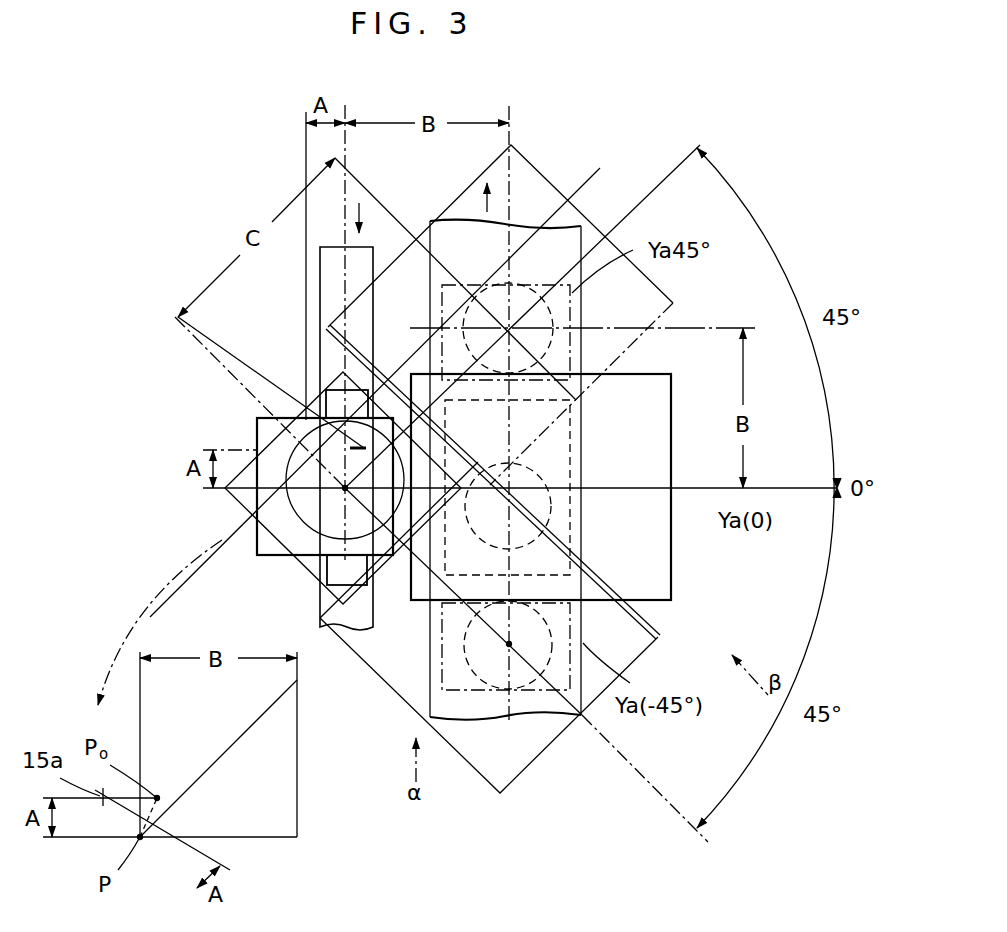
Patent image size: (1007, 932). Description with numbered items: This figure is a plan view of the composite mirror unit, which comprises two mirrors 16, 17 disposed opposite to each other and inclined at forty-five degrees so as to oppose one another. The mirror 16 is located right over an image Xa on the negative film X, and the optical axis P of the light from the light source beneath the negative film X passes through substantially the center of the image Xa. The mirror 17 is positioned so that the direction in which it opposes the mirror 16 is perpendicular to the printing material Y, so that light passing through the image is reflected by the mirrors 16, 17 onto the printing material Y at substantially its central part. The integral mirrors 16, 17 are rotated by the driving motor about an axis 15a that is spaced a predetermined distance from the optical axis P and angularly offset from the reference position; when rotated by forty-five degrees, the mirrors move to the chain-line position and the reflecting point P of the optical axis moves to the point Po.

The axis 15a is at (305, 452).
The mirror 16 is at (262, 562).
The mirror 17 is at (660, 568).
The negative film X is at (333, 247).
The printing material Y is at (557, 222).
The image Xa is at (262, 490).
The optical axis P is at (340, 492).
The point Po is at (364, 448).